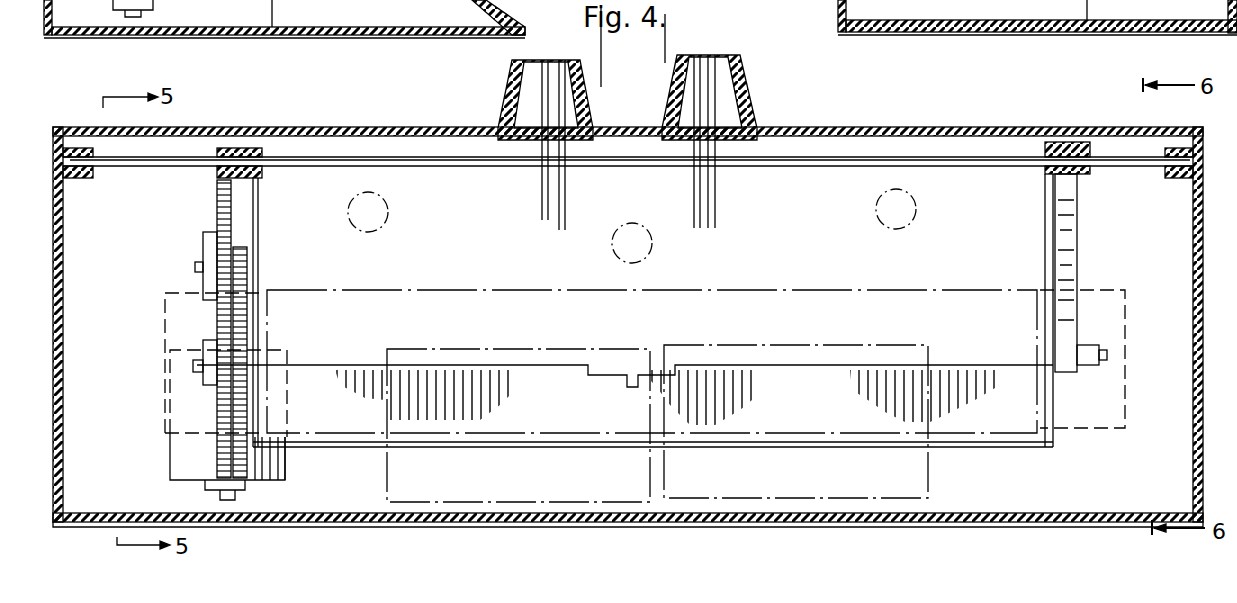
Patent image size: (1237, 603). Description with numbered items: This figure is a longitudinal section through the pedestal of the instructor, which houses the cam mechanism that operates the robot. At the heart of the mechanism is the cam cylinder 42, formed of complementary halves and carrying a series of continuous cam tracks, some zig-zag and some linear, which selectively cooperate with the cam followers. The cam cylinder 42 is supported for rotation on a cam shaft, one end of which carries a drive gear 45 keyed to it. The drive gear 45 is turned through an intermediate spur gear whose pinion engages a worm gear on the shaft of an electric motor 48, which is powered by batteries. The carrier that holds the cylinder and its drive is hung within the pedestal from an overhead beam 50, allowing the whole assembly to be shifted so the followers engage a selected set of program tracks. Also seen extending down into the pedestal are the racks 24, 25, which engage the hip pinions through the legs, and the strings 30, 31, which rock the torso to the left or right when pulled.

The rack 24 is at (541, 193).
The rack 25 is at (716, 193).
The string 30 is at (566, 195).
The string 31 is at (693, 193).
The cam cylinder 42 is at (448, 290).
The drive gear 45 is at (237, 458).
The electric motor 48 is at (185, 413).
The overhead beam 50 is at (888, 158).